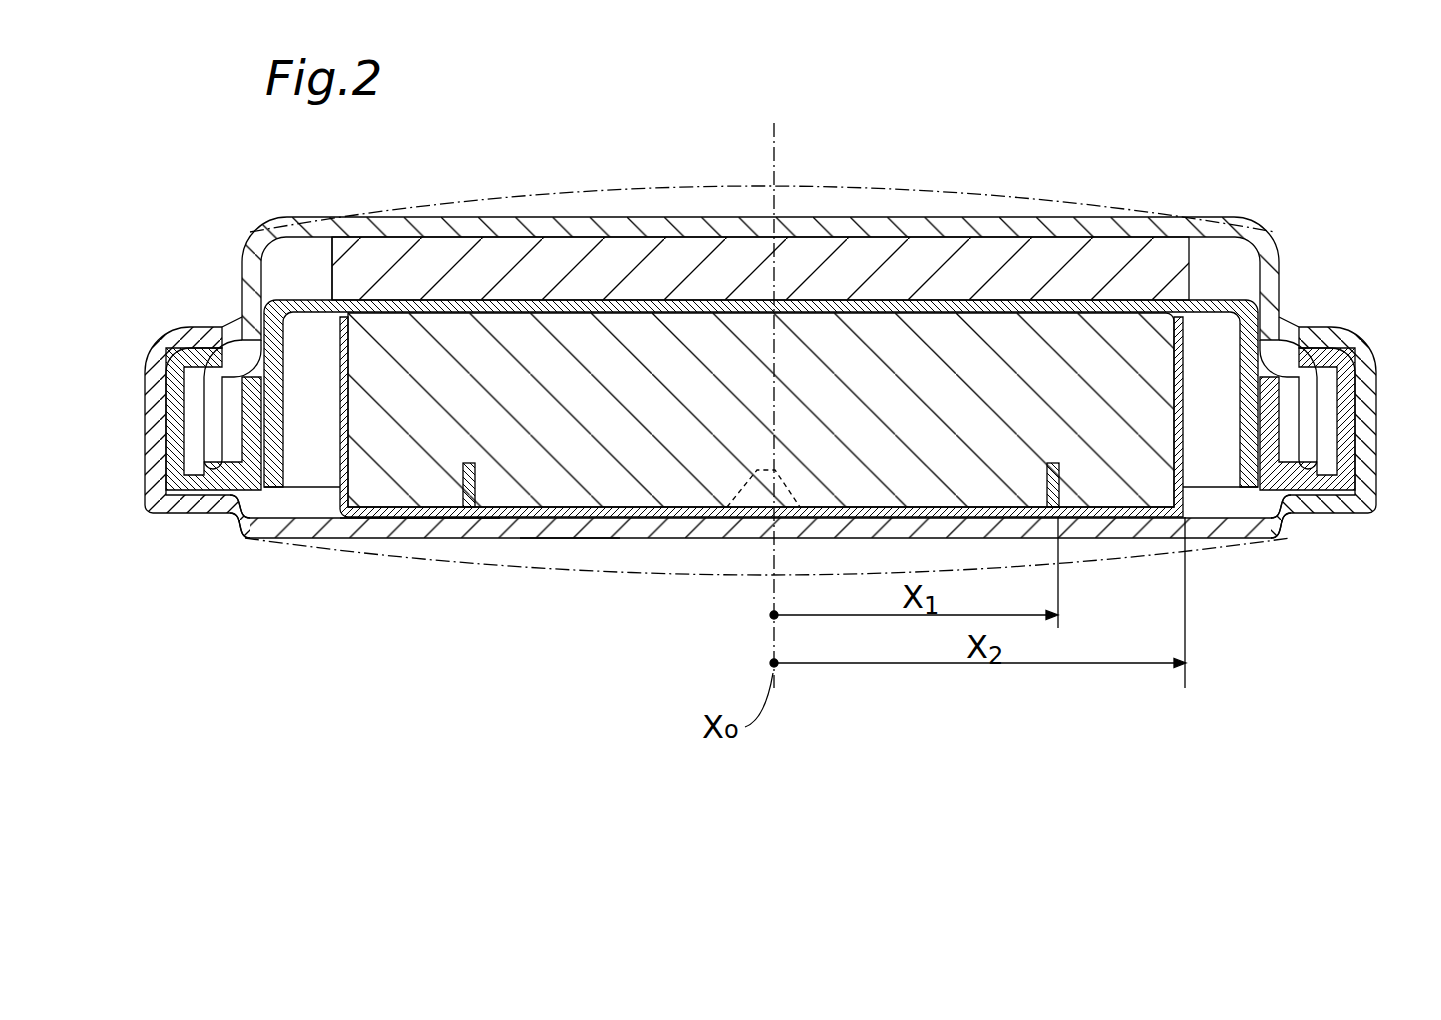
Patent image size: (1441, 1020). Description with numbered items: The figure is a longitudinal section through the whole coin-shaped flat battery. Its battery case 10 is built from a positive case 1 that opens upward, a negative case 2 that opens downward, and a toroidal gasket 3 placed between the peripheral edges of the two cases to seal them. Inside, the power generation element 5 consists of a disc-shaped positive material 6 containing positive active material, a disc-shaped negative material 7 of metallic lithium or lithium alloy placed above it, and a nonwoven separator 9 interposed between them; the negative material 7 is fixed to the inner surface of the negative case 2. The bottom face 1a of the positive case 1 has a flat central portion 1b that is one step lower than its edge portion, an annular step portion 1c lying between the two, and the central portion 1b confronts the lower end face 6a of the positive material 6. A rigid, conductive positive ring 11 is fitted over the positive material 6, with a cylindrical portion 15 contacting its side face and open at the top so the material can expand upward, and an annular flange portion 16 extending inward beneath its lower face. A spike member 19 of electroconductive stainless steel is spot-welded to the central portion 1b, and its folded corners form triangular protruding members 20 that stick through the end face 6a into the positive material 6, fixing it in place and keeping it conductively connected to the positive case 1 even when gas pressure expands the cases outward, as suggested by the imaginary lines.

The positive case 1 is at (725, 543).
The bottom face 1a is at (180, 485).
The central portion 1b is at (450, 516).
The step portion 1c is at (238, 530).
The negative case 2 is at (740, 184).
The gasket 3 is at (1362, 405).
The power generation element 5 is at (290, 267).
The positive material 6 is at (1150, 362).
The end face 6a is at (1073, 520).
The negative material 7 is at (1165, 257).
The separator 9 is at (308, 316).
The battery case 10 is at (1294, 212).
The positive ring 11 is at (1193, 407).
The cylindrical portion 15 is at (338, 427).
The flange portion 16 is at (385, 522).
The spike member 19 is at (567, 522).
The protruding members 20 is at (475, 470).